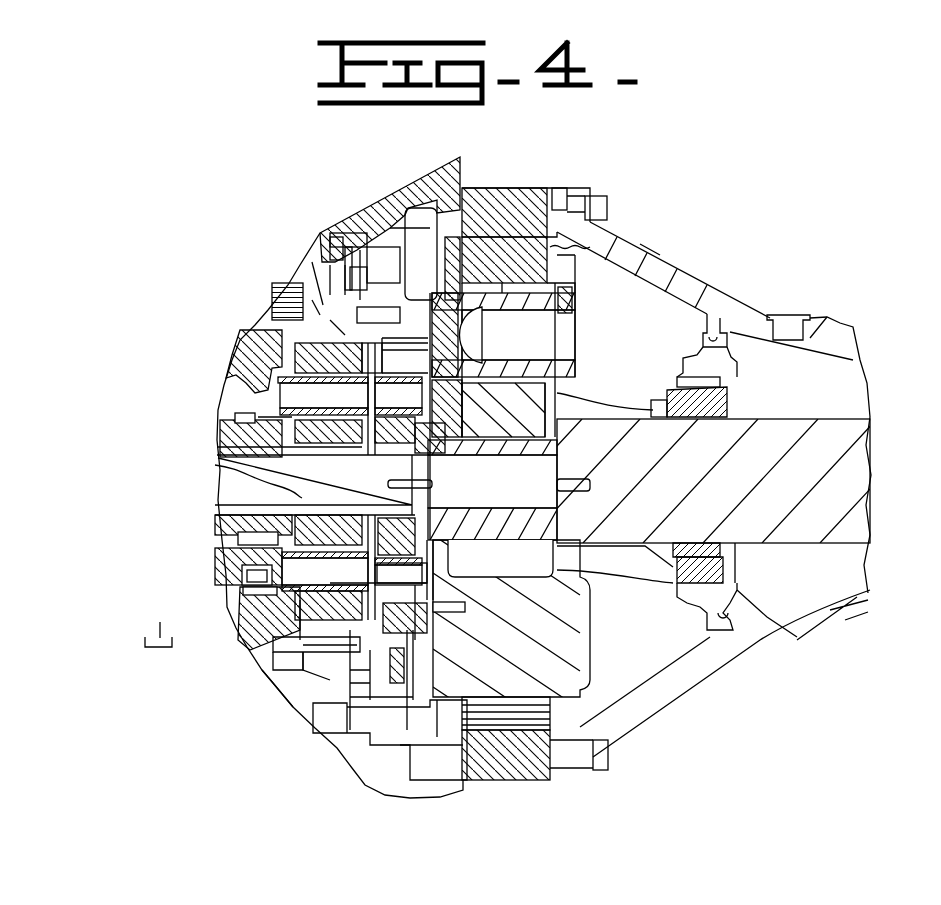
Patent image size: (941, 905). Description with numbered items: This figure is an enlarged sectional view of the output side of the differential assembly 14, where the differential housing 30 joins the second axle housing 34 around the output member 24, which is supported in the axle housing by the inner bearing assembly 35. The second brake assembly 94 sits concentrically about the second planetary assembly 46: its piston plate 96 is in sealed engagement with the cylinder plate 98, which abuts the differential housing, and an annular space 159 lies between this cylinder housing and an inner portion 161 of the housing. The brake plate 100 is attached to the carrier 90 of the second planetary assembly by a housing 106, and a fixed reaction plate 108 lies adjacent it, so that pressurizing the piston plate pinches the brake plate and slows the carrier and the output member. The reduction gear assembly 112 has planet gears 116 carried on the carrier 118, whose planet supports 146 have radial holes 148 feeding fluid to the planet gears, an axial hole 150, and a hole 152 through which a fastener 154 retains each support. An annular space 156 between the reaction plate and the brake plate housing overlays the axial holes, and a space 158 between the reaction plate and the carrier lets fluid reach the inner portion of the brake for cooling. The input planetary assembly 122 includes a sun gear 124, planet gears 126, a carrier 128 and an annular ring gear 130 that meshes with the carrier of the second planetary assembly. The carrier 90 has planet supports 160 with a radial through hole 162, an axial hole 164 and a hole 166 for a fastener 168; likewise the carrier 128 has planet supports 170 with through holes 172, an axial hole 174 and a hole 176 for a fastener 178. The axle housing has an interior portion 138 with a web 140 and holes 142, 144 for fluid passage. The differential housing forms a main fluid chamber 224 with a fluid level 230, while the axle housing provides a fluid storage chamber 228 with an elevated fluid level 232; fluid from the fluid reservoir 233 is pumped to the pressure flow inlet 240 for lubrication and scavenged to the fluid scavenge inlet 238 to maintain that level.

The differential assembly 14 is at (727, 229).
The output member 24 is at (852, 466).
The differential housing 30 is at (318, 702).
The second axle housing 34 is at (838, 624).
The inner bearing assembly 35 is at (723, 400).
The second planetary assembly 46 is at (404, 645).
The carrier 90 is at (448, 522).
The second brake assembly 94 is at (383, 226).
The piston plate 96 is at (398, 652).
The cylinder plate 98 is at (345, 268).
The brake plate 100 is at (412, 245).
The housing 106 is at (320, 312).
The reaction plate 108 is at (455, 290).
The reduction gear assembly 112 is at (548, 170).
The planet gears 116 is at (590, 243).
The carrier 118 is at (583, 690).
The input planetary assembly 122 is at (310, 666).
The sun gear 124 is at (260, 452).
The planet gears 126 is at (275, 520).
The carrier 128 is at (228, 435).
The annular ring gear 130 is at (300, 341).
The interior portion 138 is at (762, 617).
The web 140 is at (737, 373).
The hole 142 is at (719, 333).
The hole 144 is at (737, 620).
The planet supports 146 is at (573, 300).
The holes 148 is at (487, 325).
The hole 150 is at (452, 312).
The hole 152 is at (572, 290).
The fastener 154 is at (565, 260).
The annular space 156 is at (345, 335).
The space 158 is at (372, 270).
The annular space 159 is at (336, 272).
The planet supports 160 is at (432, 630).
The inner portion 161 is at (323, 305).
The through hole 162 is at (437, 620).
The hole 164 is at (322, 578).
The hole 166 is at (580, 628).
The fastener 168 is at (448, 720).
The planet supports 170 is at (292, 562).
The through holes 172 is at (300, 595).
The hole 174 is at (303, 590).
The hole 176 is at (315, 582).
The fastener 178 is at (275, 608).
The main fluid chamber 224 is at (258, 588).
The fluid storage chamber 228 is at (668, 657).
The fluid level 230 is at (243, 590).
The fluid level 232 is at (626, 258).
The fluid reservoir 233 is at (145, 645).
The fluid scavenge inlet 238 is at (795, 317).
The pressure flow inlet 240 is at (566, 186).